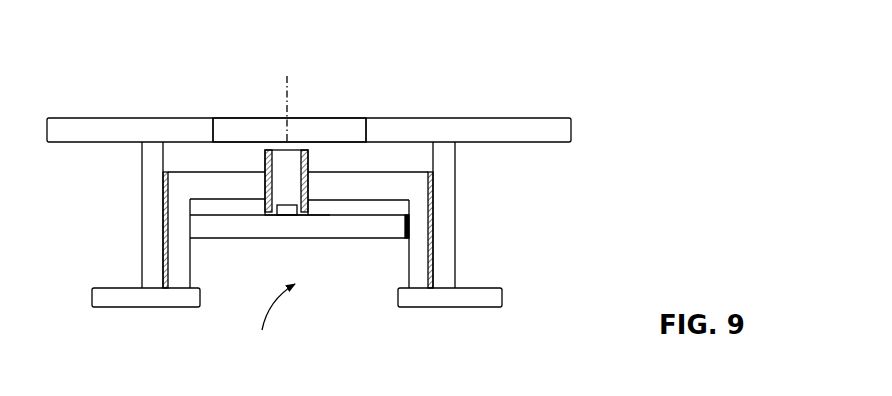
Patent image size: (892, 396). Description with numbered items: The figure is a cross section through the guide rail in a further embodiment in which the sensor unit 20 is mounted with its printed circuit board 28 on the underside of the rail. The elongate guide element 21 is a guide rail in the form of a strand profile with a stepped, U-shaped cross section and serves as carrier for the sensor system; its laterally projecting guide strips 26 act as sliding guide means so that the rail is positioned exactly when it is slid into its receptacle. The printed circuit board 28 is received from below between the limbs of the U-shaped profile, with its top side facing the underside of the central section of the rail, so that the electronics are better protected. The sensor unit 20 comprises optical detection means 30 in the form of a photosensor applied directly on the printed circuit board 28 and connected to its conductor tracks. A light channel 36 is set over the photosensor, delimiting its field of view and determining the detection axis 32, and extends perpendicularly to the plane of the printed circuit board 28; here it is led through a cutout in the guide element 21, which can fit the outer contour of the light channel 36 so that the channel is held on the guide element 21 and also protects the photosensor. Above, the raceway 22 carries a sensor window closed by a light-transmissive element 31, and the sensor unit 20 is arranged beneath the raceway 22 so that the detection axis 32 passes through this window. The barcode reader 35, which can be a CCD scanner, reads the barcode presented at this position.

The sensor unit 20 is at (299, 186).
The guide element 21 is at (423, 190).
The raceway 22 is at (556, 126).
The guide strip 26 is at (176, 307).
The printed circuit board 28 is at (226, 227).
The optical detection means 30 is at (279, 217).
The light-transmissive element 31 is at (355, 122).
The detection axis 32 is at (287, 93).
The barcode reader 35 is at (322, 209).
The light channel 36 is at (309, 167).